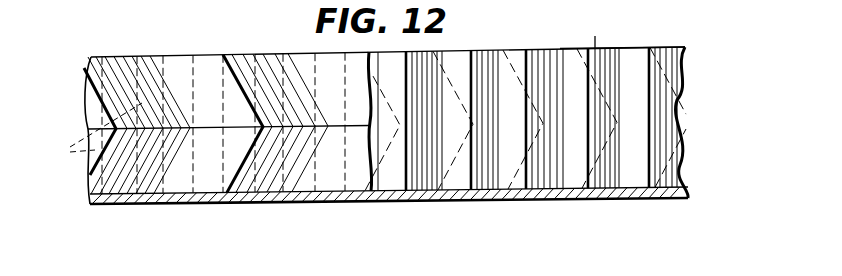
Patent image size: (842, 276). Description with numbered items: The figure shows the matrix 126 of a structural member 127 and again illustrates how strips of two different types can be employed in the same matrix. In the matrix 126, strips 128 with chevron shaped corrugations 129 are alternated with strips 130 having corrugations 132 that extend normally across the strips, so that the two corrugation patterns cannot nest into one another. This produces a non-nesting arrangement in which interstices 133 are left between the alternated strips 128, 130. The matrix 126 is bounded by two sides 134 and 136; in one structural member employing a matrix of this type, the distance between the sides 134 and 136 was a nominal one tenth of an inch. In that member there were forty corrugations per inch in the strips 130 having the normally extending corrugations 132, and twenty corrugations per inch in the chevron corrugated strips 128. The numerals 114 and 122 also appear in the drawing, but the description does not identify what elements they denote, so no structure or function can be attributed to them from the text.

The belt 114 is at (55, 0).
The belt section 122 is at (158, 3).
The matrix 126 is at (595, 27).
The structural member 127 is at (694, 93).
The strips 128 is at (180, 56).
The chevron shaped corrugations 129 is at (88, 95).
The strips 130 is at (633, 48).
The corrugations 132 is at (435, 56).
The interstices 133 is at (90, 132).
The side 134 is at (312, 203).
The side 136 is at (290, 48).